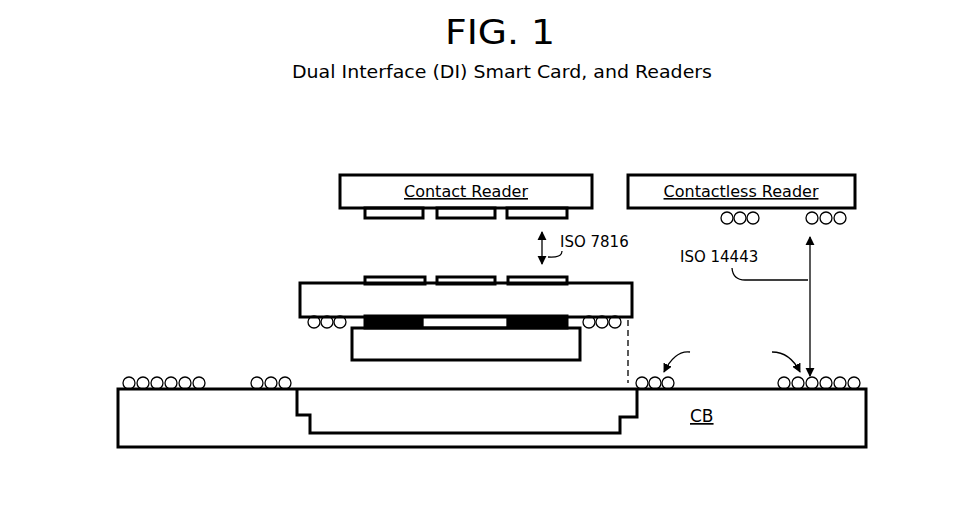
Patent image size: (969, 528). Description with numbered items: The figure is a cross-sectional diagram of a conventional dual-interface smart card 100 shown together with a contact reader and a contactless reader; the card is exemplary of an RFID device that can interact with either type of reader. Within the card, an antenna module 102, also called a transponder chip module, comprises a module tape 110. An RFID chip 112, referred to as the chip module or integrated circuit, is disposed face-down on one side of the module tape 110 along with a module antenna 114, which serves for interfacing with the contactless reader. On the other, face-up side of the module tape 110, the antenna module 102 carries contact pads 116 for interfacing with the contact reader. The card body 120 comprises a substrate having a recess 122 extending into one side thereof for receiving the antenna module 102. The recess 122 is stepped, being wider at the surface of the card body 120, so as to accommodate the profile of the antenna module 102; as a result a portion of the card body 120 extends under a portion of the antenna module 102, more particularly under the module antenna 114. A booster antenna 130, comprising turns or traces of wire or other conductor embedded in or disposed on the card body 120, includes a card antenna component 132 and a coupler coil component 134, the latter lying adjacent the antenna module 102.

The smart card 100 is at (107, 445).
The antenna module 102 is at (481, 297).
The module tape 110 is at (466, 300).
The RFID chip 112 is at (466, 344).
The module antenna 114 is at (325, 336).
The contact pads 116 is at (522, 276).
The card body 120 is at (193, 416).
The recess 122 is at (467, 411).
The booster antenna 130 is at (491, 333).
The card antenna component 132 is at (190, 376).
The coupler coil component 134 is at (244, 367).